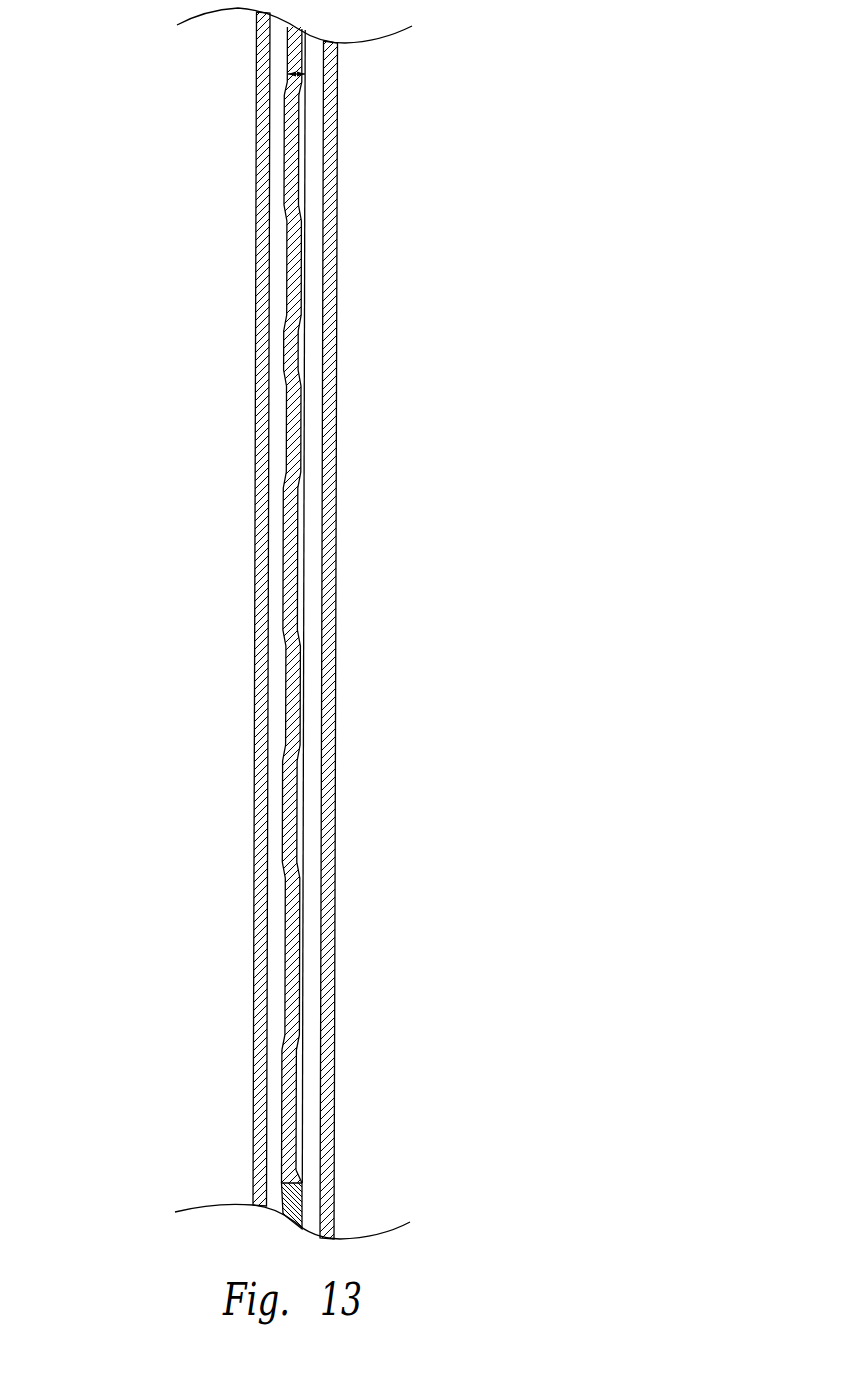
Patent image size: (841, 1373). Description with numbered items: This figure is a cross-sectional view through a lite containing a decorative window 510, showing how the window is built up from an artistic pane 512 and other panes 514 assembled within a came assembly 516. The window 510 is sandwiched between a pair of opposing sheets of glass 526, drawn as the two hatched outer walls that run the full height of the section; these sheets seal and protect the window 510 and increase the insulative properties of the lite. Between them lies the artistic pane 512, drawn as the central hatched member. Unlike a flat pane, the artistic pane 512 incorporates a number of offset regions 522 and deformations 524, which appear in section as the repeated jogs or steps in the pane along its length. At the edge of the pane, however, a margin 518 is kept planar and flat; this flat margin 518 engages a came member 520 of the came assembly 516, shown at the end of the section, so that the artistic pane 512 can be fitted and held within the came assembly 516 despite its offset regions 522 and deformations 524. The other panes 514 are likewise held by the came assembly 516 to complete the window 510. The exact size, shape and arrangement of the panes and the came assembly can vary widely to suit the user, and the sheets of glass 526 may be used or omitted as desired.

The window 510 is at (292, 623).
The artistic pane 512 is at (283, 551).
The other pane 514 is at (290, 50).
The came assembly 516 is at (305, 74).
The margin 518 is at (298, 1176).
The came member 520 is at (305, 1200).
The offset region 522 is at (281, 1108).
The deformation 524 is at (300, 953).
The sheet of glass 526 is at (255, 295).